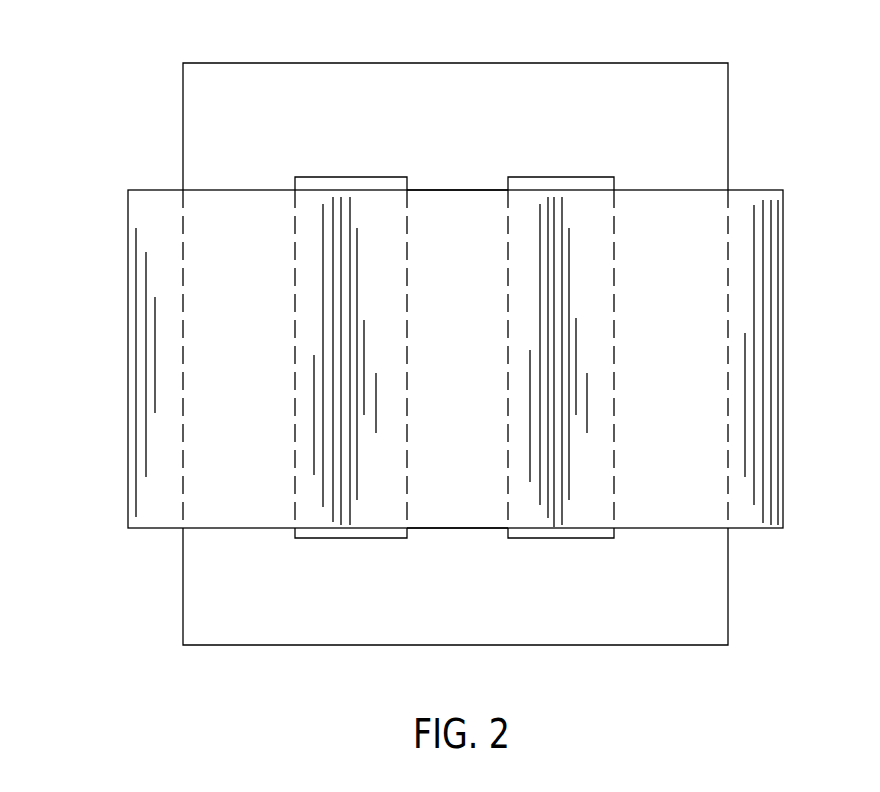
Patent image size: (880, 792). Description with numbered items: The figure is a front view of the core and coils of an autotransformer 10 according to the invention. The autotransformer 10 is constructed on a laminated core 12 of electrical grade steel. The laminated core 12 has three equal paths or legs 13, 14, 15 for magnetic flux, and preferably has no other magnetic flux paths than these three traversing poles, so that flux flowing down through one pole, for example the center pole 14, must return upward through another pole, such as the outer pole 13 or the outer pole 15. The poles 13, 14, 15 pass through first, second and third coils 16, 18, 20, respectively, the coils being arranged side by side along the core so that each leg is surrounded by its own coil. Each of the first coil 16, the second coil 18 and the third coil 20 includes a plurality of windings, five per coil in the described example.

The autotransformer 10 is at (97, 382).
The laminated core 12 is at (573, 68).
The first leg 13 is at (215, 529).
The second leg 14 is at (457, 531).
The third leg 15 is at (682, 530).
The first coil 16 is at (139, 242).
The second coil 18 is at (456, 197).
The third coil 20 is at (775, 243).